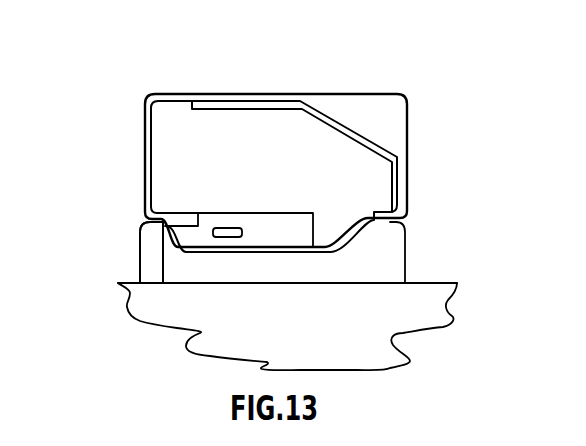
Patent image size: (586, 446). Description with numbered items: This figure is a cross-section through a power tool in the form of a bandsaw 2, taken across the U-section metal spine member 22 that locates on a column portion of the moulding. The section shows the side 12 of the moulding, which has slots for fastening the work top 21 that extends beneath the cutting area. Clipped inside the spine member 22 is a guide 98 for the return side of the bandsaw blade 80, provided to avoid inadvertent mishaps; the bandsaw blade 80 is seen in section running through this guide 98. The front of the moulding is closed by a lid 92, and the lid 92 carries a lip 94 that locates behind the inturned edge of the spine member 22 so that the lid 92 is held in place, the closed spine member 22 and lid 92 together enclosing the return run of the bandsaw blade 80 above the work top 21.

The bandsaw 2 is at (418, 82).
The spine member 22 is at (407, 123).
The guide 98 is at (390, 155).
The lip 94 is at (181, 214).
The bandsaw blade 80 is at (232, 229).
The side 12 is at (380, 248).
The lid 92 is at (155, 253).
The work top 21 is at (427, 317).